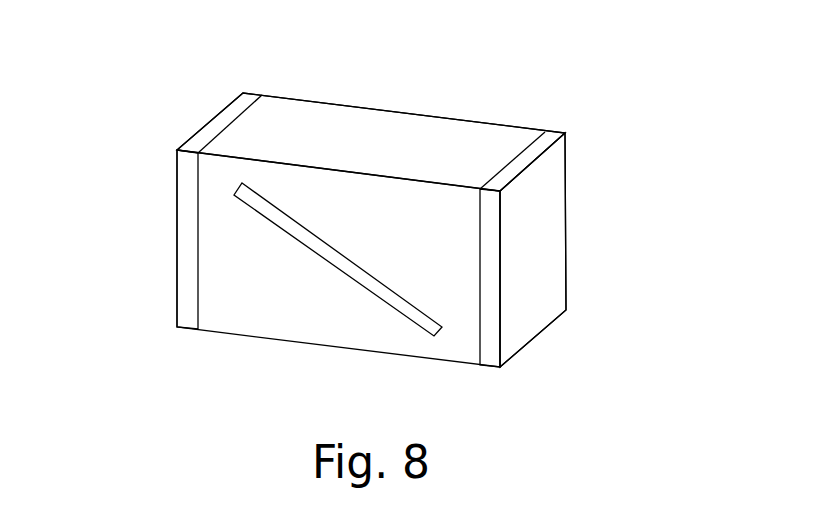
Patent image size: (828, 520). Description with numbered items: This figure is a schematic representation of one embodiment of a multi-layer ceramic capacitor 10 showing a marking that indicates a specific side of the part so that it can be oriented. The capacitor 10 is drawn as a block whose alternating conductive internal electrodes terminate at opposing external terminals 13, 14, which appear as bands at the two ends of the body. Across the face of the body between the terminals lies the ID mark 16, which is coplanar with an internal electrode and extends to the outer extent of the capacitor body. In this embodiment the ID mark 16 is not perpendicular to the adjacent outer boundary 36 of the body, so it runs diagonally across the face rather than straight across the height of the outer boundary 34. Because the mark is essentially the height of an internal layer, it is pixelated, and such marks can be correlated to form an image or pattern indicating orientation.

The capacitor 10 is at (575, 123).
The external terminal 13 is at (535, 262).
The external terminal 14 is at (190, 256).
The ID mark 16 is at (332, 257).
The outer boundary 34 is at (452, 344).
The adjacent outer boundary 36 is at (430, 148).